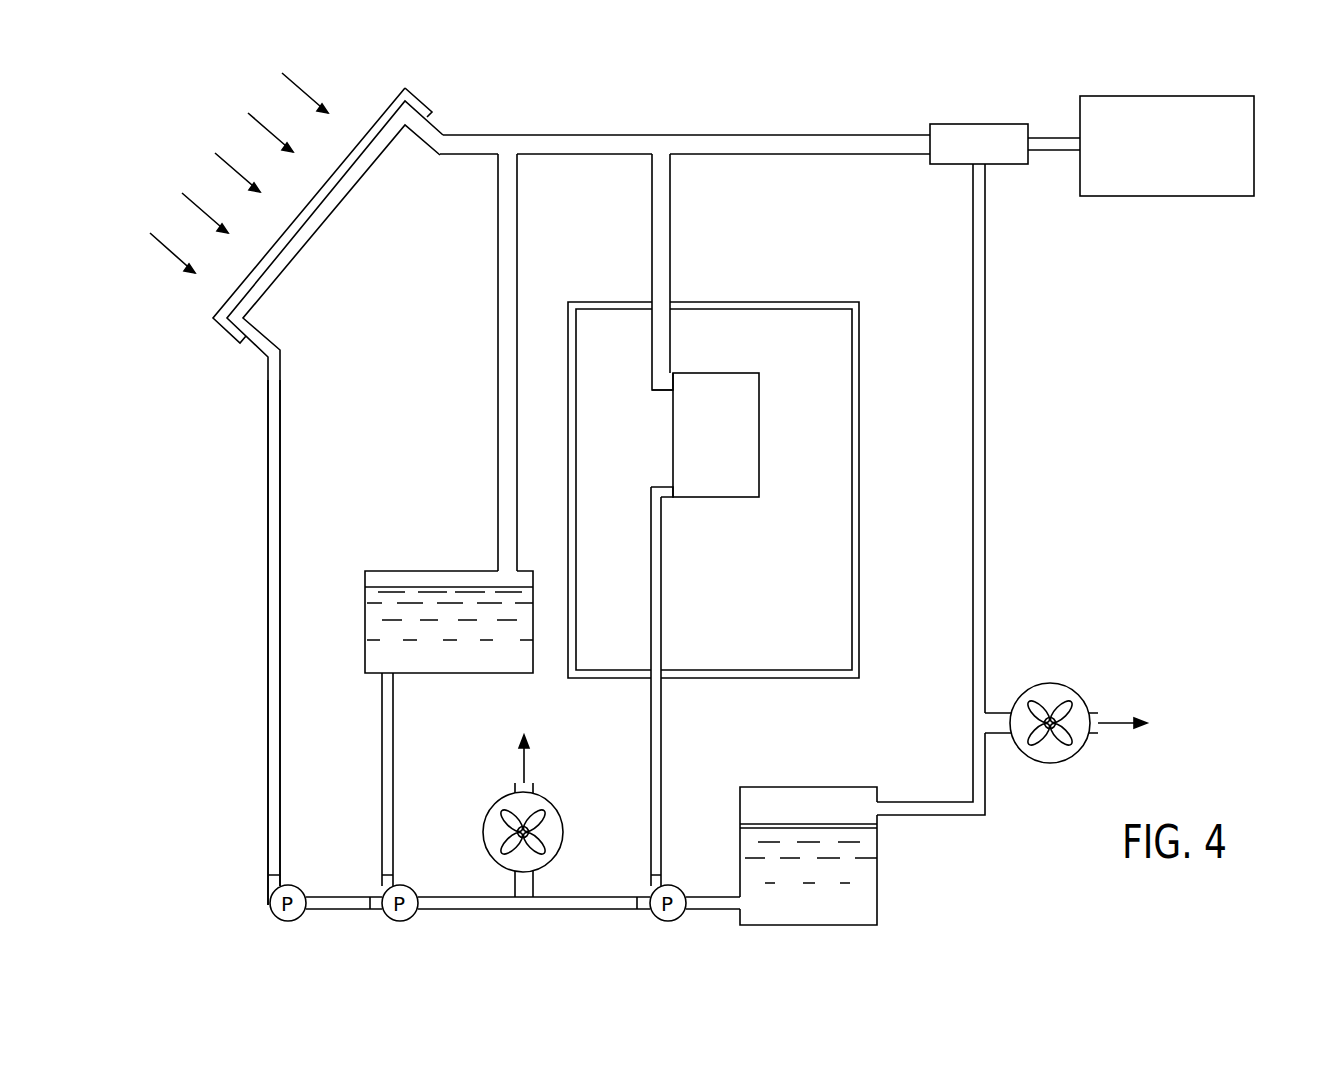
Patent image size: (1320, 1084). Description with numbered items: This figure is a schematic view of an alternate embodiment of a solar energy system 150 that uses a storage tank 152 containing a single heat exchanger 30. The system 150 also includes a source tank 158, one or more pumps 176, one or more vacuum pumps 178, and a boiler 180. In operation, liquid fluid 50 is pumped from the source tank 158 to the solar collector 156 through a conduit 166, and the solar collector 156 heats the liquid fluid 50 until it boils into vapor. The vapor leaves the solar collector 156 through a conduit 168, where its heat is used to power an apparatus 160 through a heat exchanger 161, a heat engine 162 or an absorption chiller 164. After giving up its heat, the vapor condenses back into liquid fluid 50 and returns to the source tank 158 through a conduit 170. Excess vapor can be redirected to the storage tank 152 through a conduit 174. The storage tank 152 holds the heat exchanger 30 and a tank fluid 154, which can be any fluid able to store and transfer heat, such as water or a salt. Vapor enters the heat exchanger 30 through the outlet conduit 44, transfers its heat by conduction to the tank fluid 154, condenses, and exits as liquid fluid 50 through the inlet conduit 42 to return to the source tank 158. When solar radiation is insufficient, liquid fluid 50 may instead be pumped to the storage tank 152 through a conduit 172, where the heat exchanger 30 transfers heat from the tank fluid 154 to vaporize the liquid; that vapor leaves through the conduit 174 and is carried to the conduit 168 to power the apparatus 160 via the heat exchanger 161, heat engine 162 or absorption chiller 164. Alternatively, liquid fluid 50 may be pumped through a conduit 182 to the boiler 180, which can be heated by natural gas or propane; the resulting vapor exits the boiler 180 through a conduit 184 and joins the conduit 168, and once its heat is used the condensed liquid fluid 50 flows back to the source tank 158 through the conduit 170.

The solar collector 156 is at (335, 228).
The conduit 168 is at (590, 142).
The conduit 184 is at (510, 341).
The conduit 166 is at (275, 461).
The conduit 174 is at (663, 222).
The storage tank 152 is at (860, 369).
The tank fluid 154 is at (832, 536).
The heat exchanger 30 is at (745, 484).
The outlet conduit 44 is at (676, 382).
The inlet conduit 42 is at (665, 500).
The conduit 172 is at (661, 727).
The boiler 180 is at (372, 629).
The conduit 182 is at (385, 790).
The vacuum pump 178 is at (492, 831).
The pump 176 is at (688, 886).
The liquid fluid 50 is at (840, 856).
The source tank 158 is at (877, 849).
The conduit 170 is at (985, 643).
The heat exchanger 161 is at (886, 129).
The heat engine 162 is at (886, 129).
The absorption chiller 164 is at (960, 128).
The apparatus 160 is at (1170, 197).
The solar energy system 150 is at (1005, 452).